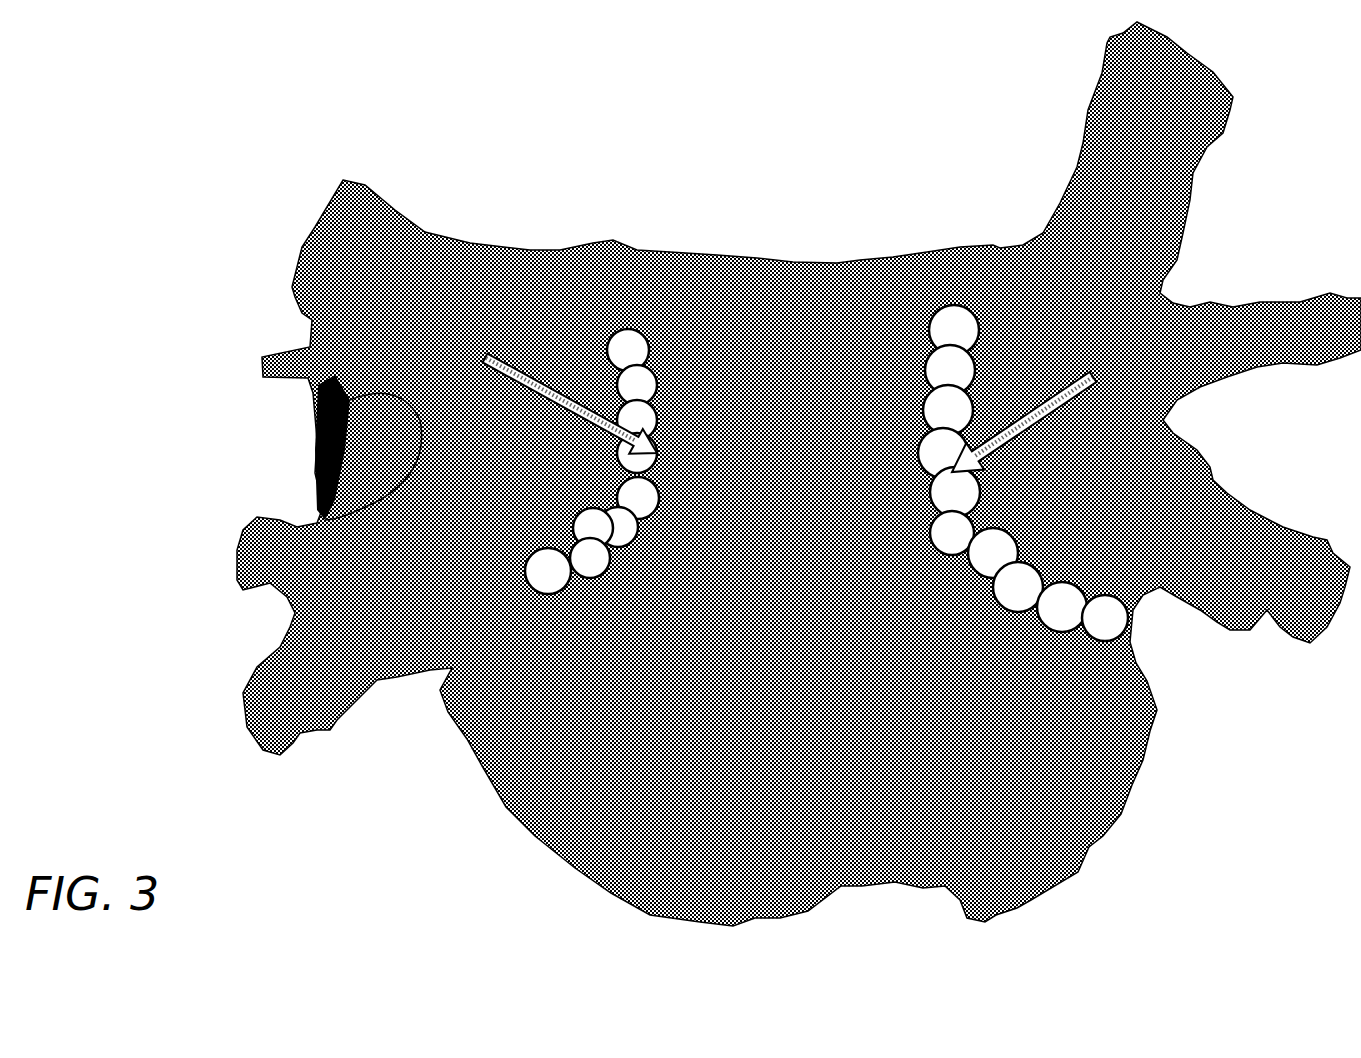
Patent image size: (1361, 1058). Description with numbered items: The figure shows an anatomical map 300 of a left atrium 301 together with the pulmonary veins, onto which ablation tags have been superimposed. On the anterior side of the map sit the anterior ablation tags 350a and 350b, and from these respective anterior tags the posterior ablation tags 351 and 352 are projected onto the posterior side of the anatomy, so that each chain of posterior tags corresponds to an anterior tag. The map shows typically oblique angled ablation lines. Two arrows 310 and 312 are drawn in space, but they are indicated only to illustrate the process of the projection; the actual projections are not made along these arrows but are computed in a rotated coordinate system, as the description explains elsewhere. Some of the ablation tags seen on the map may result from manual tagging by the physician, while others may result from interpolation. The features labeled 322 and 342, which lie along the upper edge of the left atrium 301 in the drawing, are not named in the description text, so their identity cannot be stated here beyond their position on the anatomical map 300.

The anatomical map 300 is at (1137, 843).
The left atrium 301 is at (813, 725).
The arrow 310 is at (547, 397).
The arrow 312 is at (1040, 423).
The first pedicle 322 is at (610, 227).
The second pedicle 342 is at (923, 238).
The anterior ablation tag 350a is at (510, 277).
The anterior ablation tag 350b is at (1143, 345).
The posterior ablation tag 351 is at (630, 567).
The posterior ablation tag 352 is at (955, 583).